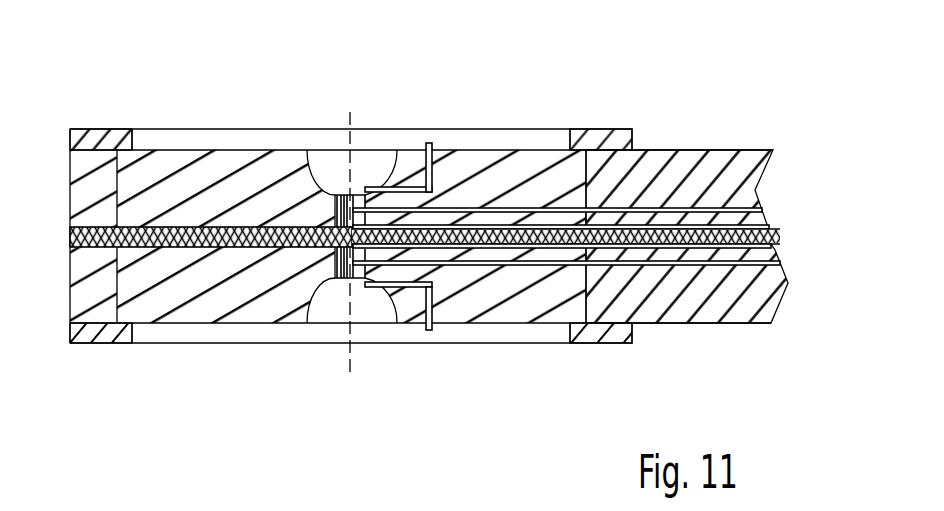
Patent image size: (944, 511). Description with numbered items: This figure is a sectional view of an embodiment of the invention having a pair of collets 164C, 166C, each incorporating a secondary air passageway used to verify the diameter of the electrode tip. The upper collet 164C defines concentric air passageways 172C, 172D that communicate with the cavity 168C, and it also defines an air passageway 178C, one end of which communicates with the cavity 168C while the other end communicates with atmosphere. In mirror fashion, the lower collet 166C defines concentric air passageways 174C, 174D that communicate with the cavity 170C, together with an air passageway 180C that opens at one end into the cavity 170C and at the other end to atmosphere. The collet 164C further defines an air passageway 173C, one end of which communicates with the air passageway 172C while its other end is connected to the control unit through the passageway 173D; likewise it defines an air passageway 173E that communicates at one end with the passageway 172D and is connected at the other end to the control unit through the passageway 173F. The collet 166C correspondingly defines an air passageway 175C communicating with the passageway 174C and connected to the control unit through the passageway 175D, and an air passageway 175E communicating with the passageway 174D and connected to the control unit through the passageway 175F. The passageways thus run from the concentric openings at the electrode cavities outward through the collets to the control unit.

The collet 164C is at (150, 157).
The collet 166C is at (168, 316).
The cavity 170C is at (312, 323).
The air passageway 172C is at (354, 168).
The air passageway 172D is at (336, 195).
The air passageway 174C is at (347, 278).
The air passageway 174D is at (339, 278).
The cavity 168C is at (395, 152).
The air passageway 178C is at (430, 186).
The air passageway 180C is at (430, 305).
The air passageway 173C is at (525, 198).
The passageway 173D is at (654, 206).
The air passageway 173E is at (560, 210).
The passageway 173F is at (760, 231).
The air passageway 175C is at (538, 267).
The passageway 175D is at (713, 268).
The air passageway 175E is at (493, 252).
The passageway 175F is at (770, 248).